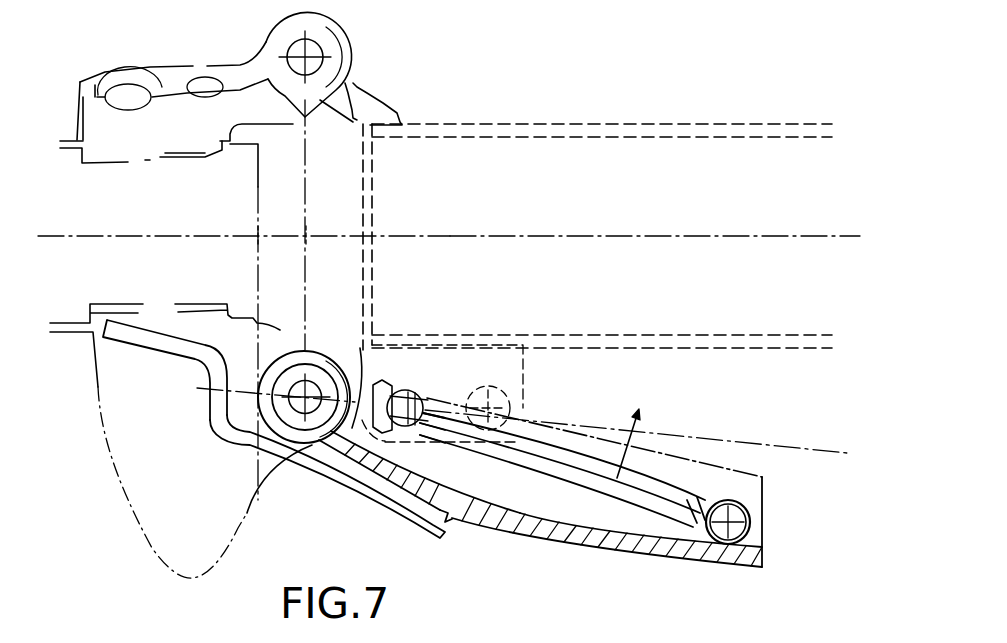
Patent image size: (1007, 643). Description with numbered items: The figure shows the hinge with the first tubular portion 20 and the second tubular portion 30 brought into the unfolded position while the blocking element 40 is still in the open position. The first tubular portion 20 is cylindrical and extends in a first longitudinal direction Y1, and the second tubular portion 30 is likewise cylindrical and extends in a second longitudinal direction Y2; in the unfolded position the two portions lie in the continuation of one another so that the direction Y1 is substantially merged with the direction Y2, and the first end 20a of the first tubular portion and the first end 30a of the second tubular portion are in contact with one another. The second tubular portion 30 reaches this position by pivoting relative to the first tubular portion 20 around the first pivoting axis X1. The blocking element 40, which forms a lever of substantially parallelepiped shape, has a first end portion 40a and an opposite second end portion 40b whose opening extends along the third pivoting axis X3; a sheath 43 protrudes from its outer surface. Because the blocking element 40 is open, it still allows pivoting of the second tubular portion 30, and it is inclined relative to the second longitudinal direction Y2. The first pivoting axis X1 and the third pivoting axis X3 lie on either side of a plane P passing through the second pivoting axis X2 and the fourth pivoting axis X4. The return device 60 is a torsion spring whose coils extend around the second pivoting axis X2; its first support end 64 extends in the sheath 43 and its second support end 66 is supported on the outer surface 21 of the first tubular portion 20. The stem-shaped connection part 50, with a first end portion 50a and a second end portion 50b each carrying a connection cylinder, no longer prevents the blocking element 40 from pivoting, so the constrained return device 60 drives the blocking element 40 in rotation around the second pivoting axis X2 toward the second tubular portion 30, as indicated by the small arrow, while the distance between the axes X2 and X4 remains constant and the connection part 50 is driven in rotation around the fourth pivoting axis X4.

The first tubular portion 20 is at (170, 201).
The first end 20a is at (285, 195).
The outer surface 21 is at (132, 313).
The second tubular portion 30 is at (651, 201).
The first end 30a is at (343, 198).
The blocking element 40 is at (477, 536).
The first end portion 40a is at (312, 462).
The second end portion 40b is at (757, 565).
The sheath 43 is at (423, 534).
The connection part 50 is at (563, 482).
The first end portion 50a is at (700, 530).
The second end portion 50b is at (440, 403).
The return device 60 is at (260, 430).
The first support end 64 is at (383, 488).
The second support end 66 is at (143, 340).
The first pivoting axis X1 is at (323, 43).
The second pivoting axis X2 is at (318, 384).
The third pivoting axis X3 is at (752, 511).
The fourth pivoting axis X4 is at (401, 387).
The first longitudinal direction Y1 is at (229, 238).
The second longitudinal direction Y2 is at (669, 238).
The plane P is at (649, 431).